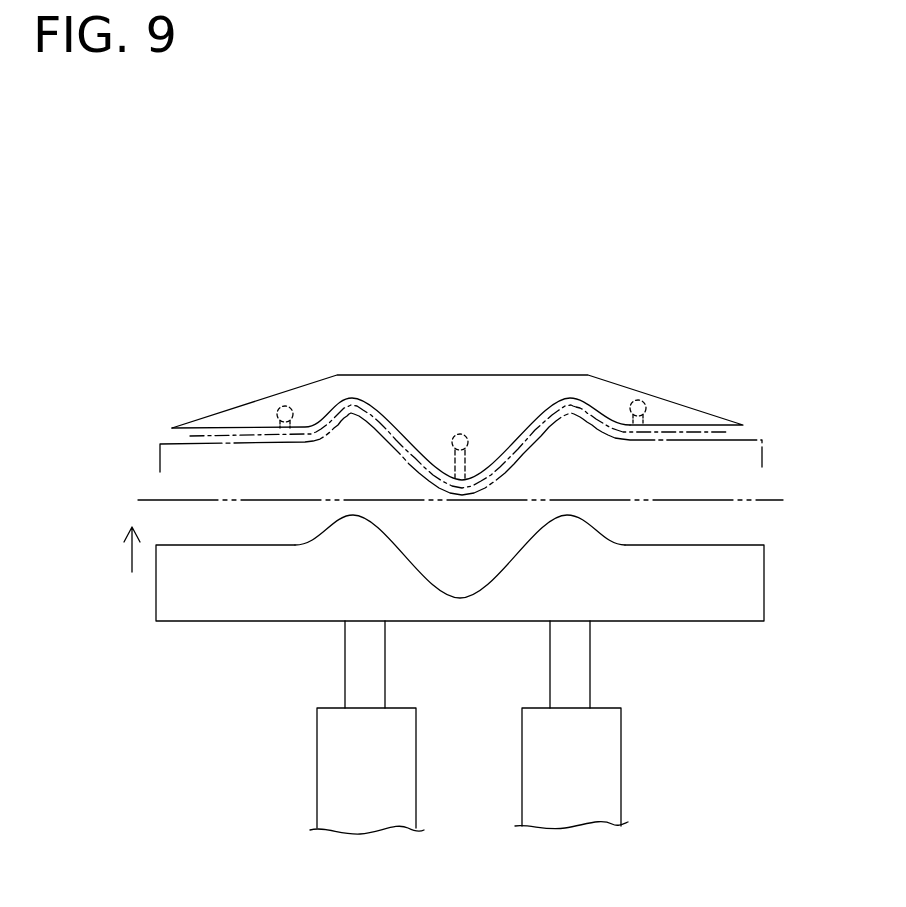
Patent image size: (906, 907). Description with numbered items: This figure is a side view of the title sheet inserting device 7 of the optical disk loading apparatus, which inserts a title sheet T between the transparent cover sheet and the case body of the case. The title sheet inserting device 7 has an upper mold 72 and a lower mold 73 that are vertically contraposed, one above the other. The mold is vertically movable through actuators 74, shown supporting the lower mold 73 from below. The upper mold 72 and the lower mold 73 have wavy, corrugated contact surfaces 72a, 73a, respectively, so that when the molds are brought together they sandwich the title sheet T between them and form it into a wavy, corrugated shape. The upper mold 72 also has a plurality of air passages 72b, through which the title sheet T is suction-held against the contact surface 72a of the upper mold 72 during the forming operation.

The title sheet inserting device 7 is at (130, 639).
The upper mold 72 is at (535, 388).
The contact surface 72a is at (367, 407).
The air passages 72b is at (272, 423).
The title sheet T is at (728, 432).
The lower mold 73 is at (745, 594).
The contact surface 73a is at (392, 531).
The actuators 74 is at (528, 787).